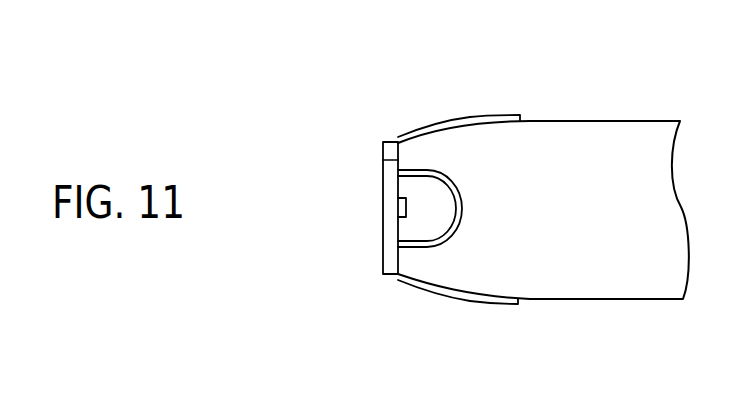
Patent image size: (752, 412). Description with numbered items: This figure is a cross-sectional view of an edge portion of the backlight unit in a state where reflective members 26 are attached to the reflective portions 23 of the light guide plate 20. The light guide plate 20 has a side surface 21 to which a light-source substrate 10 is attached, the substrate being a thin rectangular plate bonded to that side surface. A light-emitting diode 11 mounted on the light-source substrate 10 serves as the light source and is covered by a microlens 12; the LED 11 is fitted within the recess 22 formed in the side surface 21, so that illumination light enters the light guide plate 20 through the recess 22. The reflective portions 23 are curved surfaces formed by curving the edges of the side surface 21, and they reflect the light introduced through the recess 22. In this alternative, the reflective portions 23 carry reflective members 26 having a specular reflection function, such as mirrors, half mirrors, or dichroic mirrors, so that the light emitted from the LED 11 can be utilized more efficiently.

The light-source substrate 10 is at (382, 242).
The light-emitting diode 11 is at (407, 212).
The microlens 12 is at (462, 216).
The light guide plate 20 is at (616, 68).
The side surface 21 is at (386, 156).
The recess 22 is at (438, 175).
The reflective portion 23 is at (434, 127).
The reflective member 26 is at (482, 118).